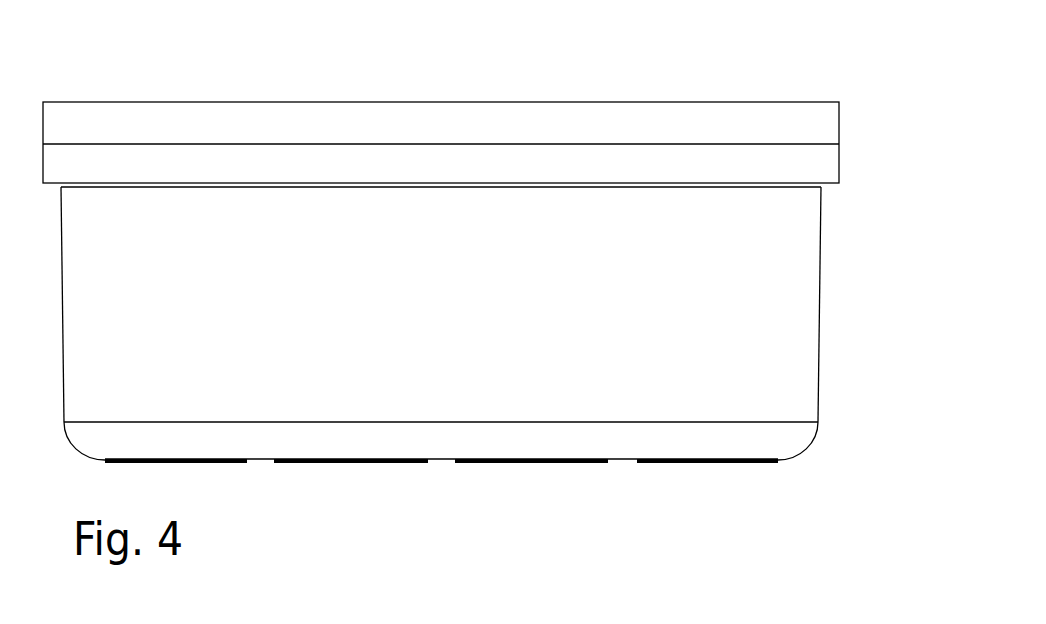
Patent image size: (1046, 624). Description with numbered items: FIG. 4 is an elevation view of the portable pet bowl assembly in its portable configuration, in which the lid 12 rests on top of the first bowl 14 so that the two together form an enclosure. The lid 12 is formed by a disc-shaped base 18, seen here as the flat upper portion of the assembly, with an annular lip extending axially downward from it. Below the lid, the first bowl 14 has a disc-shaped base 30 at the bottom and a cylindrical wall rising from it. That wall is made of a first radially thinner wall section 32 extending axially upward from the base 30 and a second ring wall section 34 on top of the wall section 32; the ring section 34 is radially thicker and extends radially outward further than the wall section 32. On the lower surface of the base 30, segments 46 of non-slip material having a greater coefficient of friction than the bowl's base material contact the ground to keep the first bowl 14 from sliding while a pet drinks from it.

The lid 12 is at (484, 286).
The first bowl 14 is at (493, 374).
The base 18 is at (570, 118).
The base 30 is at (245, 450).
The first radially thinner wall section 32 is at (783, 255).
The second ring wall section 34 is at (448, 166).
The segments 46 is at (680, 468).